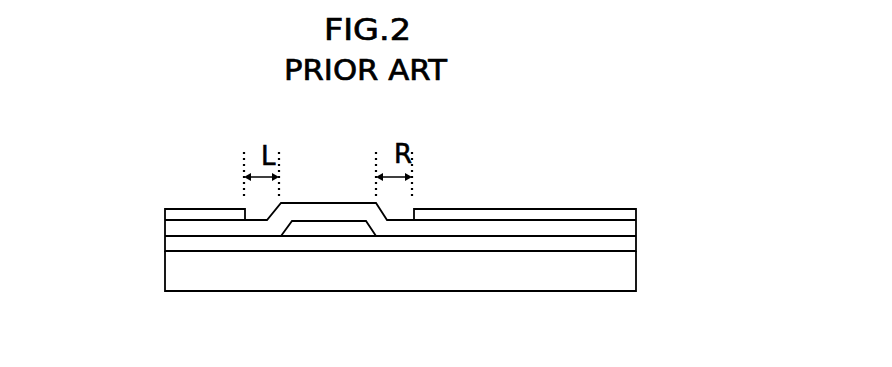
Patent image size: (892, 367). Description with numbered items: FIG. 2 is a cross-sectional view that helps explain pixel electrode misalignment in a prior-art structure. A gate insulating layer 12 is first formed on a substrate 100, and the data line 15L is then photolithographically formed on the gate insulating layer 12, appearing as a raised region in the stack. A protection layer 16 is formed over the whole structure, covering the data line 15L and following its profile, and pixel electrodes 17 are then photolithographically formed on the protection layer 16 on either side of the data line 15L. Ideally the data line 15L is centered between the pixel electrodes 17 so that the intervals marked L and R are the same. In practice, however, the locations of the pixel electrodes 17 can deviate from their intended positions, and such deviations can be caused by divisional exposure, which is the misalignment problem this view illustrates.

The substrate 100 is at (622, 273).
The gate insulating layer 12 is at (173, 244).
The protection layer 16 is at (174, 232).
The data line 15L is at (315, 228).
The pixel electrodes 17 is at (184, 213).